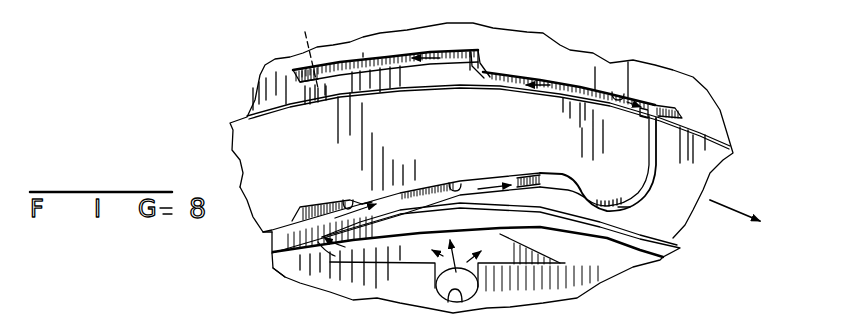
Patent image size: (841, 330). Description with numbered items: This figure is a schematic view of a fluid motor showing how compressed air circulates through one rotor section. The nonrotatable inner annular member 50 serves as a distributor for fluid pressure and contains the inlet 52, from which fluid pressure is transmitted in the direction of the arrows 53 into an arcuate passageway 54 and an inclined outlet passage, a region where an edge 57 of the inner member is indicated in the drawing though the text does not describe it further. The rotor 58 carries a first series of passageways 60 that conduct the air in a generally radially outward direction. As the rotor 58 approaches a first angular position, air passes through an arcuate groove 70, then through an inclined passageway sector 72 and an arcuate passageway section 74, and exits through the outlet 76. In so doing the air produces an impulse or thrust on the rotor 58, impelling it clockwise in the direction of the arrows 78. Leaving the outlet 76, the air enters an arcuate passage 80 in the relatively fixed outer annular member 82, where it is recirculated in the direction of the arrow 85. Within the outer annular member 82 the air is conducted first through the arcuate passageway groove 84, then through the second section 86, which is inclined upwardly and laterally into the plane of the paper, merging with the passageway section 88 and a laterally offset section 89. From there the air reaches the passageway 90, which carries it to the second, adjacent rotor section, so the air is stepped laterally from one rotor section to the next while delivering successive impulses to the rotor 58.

The inner annular member 50 is at (573, 288).
The inlet 52 is at (453, 290).
The arrows 53 is at (483, 270).
The arcuate passageway 54 is at (341, 265).
The lower edge 57 is at (288, 270).
The rotor 58 is at (262, 143).
The first series of passageways 60 is at (653, 172).
The arcuate groove 70 is at (345, 202).
The inclined passageway sector 72 is at (454, 183).
The arcuate passageway section 74 is at (628, 204).
The outlet 76 is at (655, 105).
The arrows 78 is at (740, 210).
The arcuate passage 80 is at (575, 83).
The outer annular member 82 is at (555, 52).
The arcuate passageway groove 84 is at (628, 62).
The arrow 85 is at (537, 80).
The second section 86 is at (478, 50).
The passageway section 88 is at (363, 53).
The laterally offset section 89 is at (294, 69).
The passageway 90 is at (300, 49).